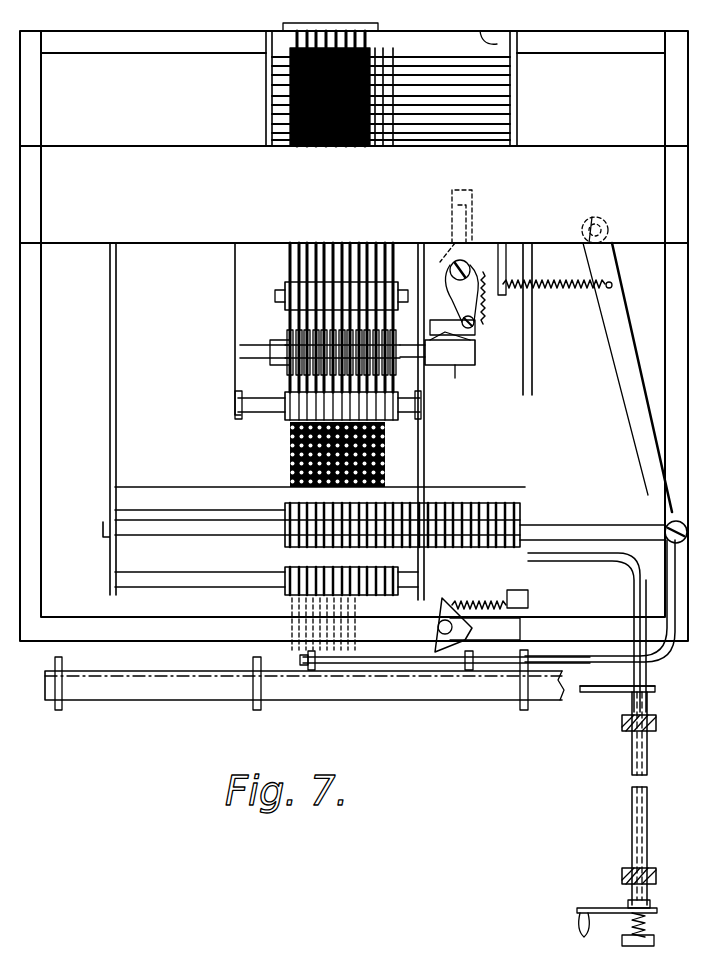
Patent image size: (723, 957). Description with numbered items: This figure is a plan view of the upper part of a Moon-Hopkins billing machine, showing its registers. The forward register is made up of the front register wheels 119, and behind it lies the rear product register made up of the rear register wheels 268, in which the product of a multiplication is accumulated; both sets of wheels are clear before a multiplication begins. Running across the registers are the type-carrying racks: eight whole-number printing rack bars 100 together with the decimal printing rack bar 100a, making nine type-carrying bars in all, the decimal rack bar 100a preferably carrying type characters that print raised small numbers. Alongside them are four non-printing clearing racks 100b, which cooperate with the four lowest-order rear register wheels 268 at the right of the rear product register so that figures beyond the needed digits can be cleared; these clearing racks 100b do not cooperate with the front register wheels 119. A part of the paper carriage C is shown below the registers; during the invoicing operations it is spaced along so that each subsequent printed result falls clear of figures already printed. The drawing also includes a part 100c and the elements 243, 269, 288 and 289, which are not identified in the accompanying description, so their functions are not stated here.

The selector bar assembly 243 is at (291, 105).
The printing rack bar 100 is at (292, 146).
The decimal printing rack bar 100a is at (362, 146).
The non-printing clearing rack 100b is at (390, 57).
The code bar lever 100c is at (384, 245).
The rear register wheel 268 is at (296, 370).
The bracket 269 is at (476, 356).
The spring 288 is at (462, 341).
The pawl 289 is at (446, 326).
The front register wheel 119 is at (420, 503).
The paper carriage C is at (465, 692).